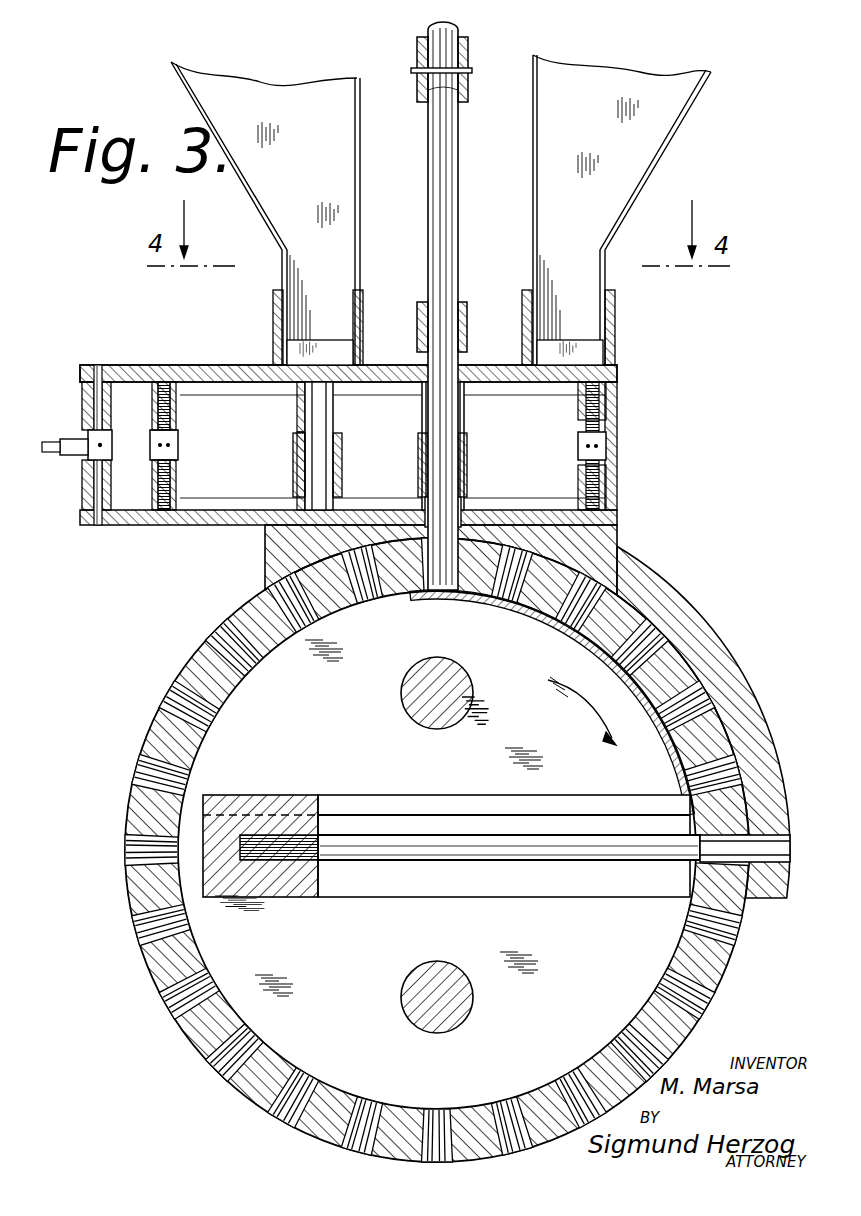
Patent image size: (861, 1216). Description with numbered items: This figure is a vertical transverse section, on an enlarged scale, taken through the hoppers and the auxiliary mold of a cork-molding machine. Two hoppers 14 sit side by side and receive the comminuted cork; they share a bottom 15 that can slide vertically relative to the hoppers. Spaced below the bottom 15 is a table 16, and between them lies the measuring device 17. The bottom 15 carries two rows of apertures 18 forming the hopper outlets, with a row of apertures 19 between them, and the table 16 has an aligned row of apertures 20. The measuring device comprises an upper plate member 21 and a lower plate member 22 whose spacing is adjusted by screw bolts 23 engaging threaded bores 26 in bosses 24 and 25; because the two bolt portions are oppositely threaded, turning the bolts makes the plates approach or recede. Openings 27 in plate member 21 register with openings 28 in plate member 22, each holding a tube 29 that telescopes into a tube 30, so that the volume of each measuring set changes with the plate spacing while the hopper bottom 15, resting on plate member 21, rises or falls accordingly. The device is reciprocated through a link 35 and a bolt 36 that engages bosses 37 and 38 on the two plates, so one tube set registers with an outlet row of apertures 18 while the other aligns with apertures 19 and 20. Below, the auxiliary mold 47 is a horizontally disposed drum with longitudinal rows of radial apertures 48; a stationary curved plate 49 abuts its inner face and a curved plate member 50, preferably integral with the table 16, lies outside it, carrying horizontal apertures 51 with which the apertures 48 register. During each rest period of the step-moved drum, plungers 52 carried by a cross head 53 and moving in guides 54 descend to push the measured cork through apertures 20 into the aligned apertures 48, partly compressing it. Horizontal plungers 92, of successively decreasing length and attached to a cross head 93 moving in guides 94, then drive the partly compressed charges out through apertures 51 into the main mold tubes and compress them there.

The hoppers 14 is at (355, 176).
The bottom 15 is at (386, 365).
The table 16 is at (265, 549).
The measuring device 17 is at (461, 420).
The apertures 18 is at (292, 347).
The apertures 19 is at (567, 621).
The apertures 20 is at (463, 502).
The plate member 21 is at (205, 360).
The plate member 22 is at (212, 510).
The screw bolts 23 is at (178, 467).
The bosses 24 is at (176, 398).
The bosses 25 is at (176, 487).
The bores 26 is at (158, 415).
The openings 27 is at (297, 398).
The openings 28 is at (292, 502).
The tube 29 is at (334, 422).
The tube 30 is at (342, 476).
The link 35 is at (70, 444).
The bolt 36 is at (95, 408).
The boss 37 is at (111, 410).
The boss 38 is at (111, 486).
The auxiliary mold 47 is at (160, 722).
The radial apertures 48 is at (213, 716).
The stationary curved plate 49 is at (437, 845).
The curved plate member 50 is at (722, 646).
The apertures 51 is at (790, 849).
The plungers 52 is at (458, 233).
The cross head 53 is at (470, 102).
The guides 54 is at (468, 320).
The plungers 92 is at (456, 832).
The cross head 93 is at (264, 797).
The guides 94 is at (378, 797).